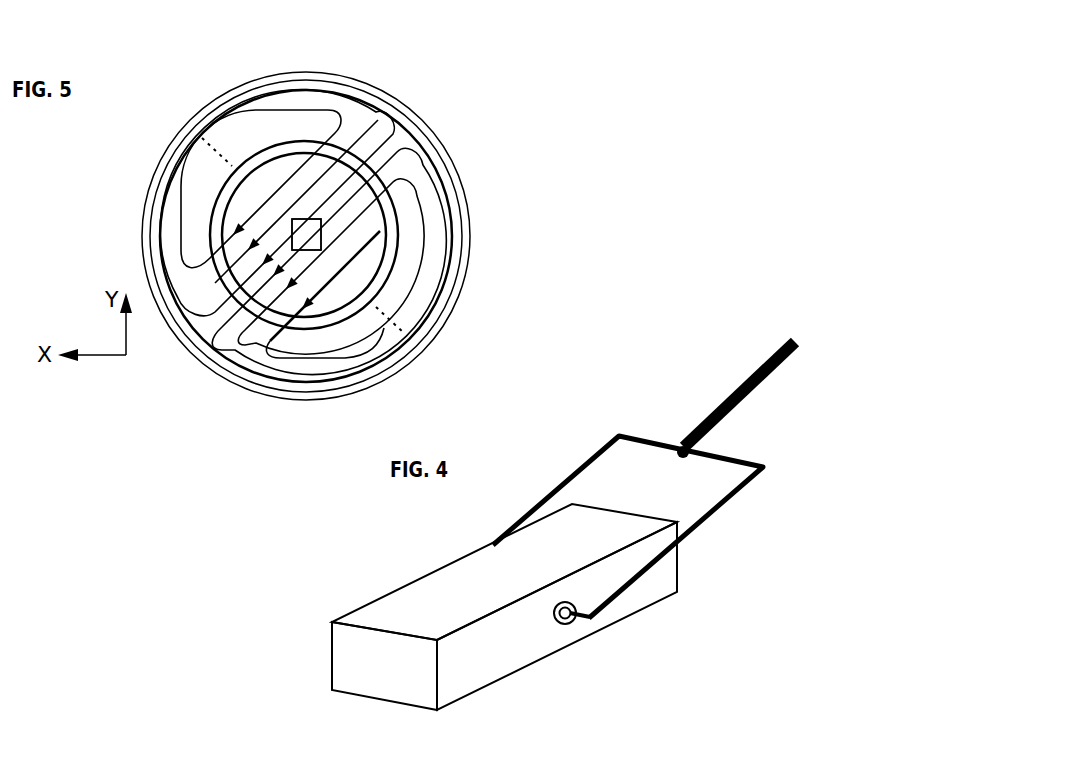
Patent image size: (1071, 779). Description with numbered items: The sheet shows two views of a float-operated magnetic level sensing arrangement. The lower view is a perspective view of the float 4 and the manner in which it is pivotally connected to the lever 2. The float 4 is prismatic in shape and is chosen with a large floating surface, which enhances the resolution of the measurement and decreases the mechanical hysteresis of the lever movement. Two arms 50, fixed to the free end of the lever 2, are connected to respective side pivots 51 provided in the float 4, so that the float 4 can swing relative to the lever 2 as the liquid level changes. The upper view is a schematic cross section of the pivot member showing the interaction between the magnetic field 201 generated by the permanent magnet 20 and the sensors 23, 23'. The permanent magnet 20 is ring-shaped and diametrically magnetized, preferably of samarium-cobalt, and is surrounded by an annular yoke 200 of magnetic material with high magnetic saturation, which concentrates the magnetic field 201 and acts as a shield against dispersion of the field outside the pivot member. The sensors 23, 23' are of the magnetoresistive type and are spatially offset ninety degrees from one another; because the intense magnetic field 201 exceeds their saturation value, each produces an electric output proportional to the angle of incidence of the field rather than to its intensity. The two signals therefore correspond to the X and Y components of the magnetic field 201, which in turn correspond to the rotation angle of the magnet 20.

In FIG. 4, the lever 2 is at (737, 381).
In FIG. 4, the float 4 is at (418, 583).
In FIG. 5, the permanent magnet 20 is at (263, 132).
In FIG. 5, the sensor 23 is at (225, 138).
In FIG. 5, the sensor 23' is at (239, 138).
In FIG. 4, the arms 50 is at (568, 478).
In FIG. 4, the side pivots 51 is at (567, 625).
In FIG. 5, the annular yoke 200 is at (415, 121).
In FIG. 5, the magnetic field 201 is at (257, 211).